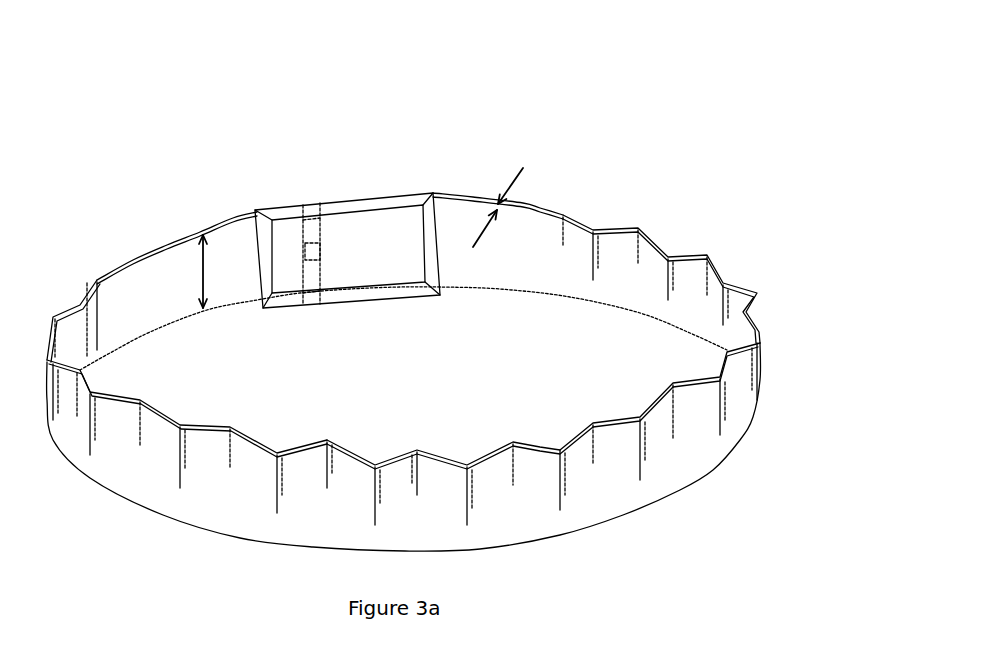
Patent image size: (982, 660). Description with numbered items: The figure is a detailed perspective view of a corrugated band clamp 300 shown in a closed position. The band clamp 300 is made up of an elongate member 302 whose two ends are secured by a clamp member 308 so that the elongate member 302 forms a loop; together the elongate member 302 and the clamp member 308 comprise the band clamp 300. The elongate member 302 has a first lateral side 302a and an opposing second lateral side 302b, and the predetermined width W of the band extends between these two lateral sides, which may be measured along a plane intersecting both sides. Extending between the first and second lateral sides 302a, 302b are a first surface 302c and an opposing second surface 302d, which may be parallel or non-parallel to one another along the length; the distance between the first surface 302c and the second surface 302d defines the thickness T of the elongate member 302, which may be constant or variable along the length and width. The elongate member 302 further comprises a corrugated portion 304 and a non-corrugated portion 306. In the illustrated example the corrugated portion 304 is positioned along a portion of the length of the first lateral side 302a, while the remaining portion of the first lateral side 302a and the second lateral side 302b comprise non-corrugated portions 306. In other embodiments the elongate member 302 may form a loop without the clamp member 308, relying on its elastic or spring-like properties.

The corrugated band clamp 300 is at (677, 103).
The elongate member 302 is at (598, 502).
The first lateral side 302a is at (583, 225).
The second lateral side 302b is at (512, 288).
The first surface 302c is at (147, 307).
The second surface 302d is at (187, 436).
The corrugated portion 304 is at (402, 450).
The non-corrugated portion 306 is at (153, 253).
The clamp member 308 is at (330, 207).